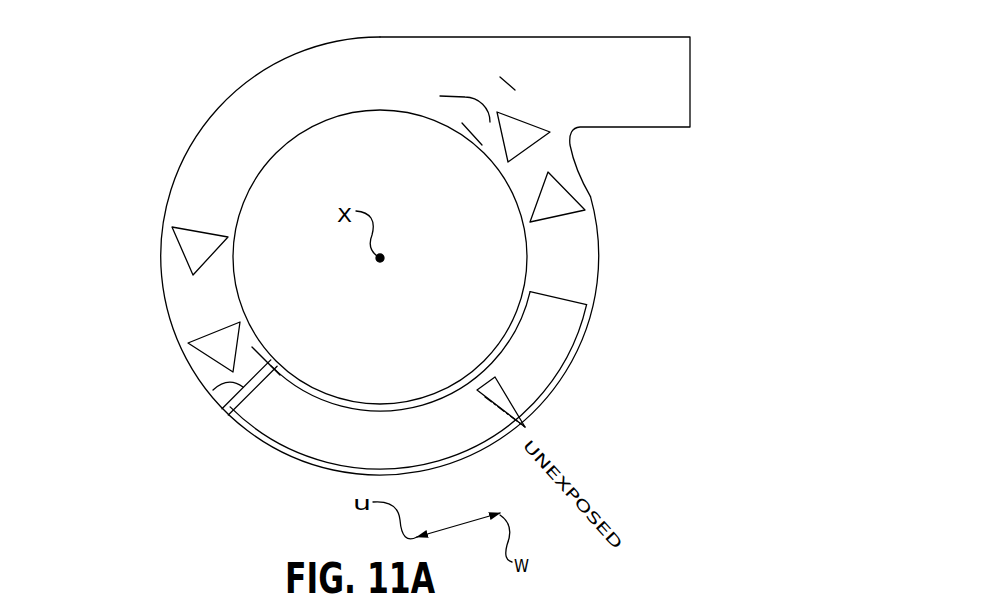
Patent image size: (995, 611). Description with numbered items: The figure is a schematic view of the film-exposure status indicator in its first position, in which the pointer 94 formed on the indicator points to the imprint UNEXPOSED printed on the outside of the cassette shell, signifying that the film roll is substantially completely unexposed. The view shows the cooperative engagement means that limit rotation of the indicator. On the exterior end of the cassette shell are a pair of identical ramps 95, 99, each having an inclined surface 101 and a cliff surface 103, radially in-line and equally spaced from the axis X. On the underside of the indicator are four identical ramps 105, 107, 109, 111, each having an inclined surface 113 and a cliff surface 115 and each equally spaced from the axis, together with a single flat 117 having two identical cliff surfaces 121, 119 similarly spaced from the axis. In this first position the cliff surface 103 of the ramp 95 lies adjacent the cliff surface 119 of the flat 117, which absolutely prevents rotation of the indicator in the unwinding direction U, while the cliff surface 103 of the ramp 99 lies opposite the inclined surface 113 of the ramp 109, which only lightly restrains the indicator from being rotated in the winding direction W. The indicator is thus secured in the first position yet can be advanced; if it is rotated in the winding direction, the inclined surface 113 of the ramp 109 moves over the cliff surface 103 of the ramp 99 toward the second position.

The pointer 94 is at (485, 397).
The ramp 95 is at (226, 406).
The ramp 99 is at (516, 83).
The inclined surface 101 is at (440, 97).
The cliff surface 103 is at (287, 380).
The ramp 105 is at (205, 355).
The ramp 107 is at (180, 251).
The ramp 109 is at (495, 149).
The ramp 111 is at (585, 195).
The inclined surface 113 is at (528, 135).
The cliff surface 115 is at (527, 153).
The flat 117 is at (393, 461).
The cliff surface 119 is at (232, 415).
The cliff surface 121 is at (555, 297).